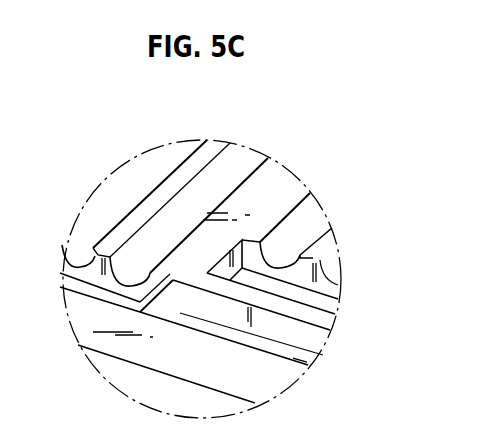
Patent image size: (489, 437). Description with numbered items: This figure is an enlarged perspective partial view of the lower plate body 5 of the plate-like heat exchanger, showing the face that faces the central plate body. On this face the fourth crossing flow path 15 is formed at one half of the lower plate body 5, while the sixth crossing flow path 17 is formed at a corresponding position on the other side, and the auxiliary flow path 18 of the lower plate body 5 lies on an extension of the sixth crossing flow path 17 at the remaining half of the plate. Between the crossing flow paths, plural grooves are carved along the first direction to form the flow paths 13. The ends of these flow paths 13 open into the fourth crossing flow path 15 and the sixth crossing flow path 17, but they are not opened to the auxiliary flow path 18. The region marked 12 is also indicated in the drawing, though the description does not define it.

The lower plate body 5 is at (253, 197).
The recess 12 is at (183, 313).
The flow paths 13 is at (172, 220).
The fourth crossing flow path 15 is at (333, 306).
The sixth crossing flow path 17 is at (62, 280).
The auxiliary flow path 18 is at (307, 362).